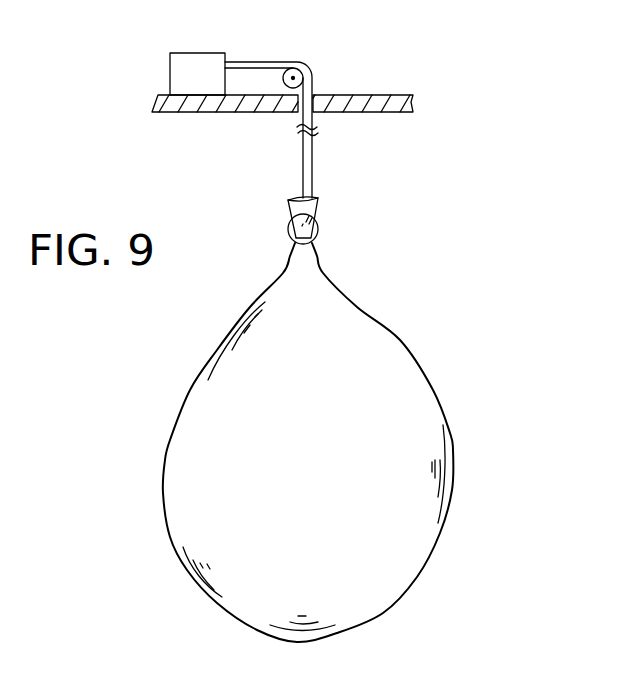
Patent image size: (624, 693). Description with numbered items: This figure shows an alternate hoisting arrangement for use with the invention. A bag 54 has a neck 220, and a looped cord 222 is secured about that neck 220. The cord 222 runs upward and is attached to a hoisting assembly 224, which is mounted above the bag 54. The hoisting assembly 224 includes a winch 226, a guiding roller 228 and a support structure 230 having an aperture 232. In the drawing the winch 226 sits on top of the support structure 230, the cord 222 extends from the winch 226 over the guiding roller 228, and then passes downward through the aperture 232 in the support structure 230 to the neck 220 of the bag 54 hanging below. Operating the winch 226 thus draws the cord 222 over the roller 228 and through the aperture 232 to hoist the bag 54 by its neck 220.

The bag 54 is at (427, 453).
The neck 220 is at (311, 218).
The looped cord 222 is at (314, 238).
The hoisting assembly 224 is at (156, 76).
The winch 226 is at (205, 58).
The guiding roller 228 is at (291, 80).
The support structure 230 is at (413, 102).
The aperture 232 is at (312, 110).